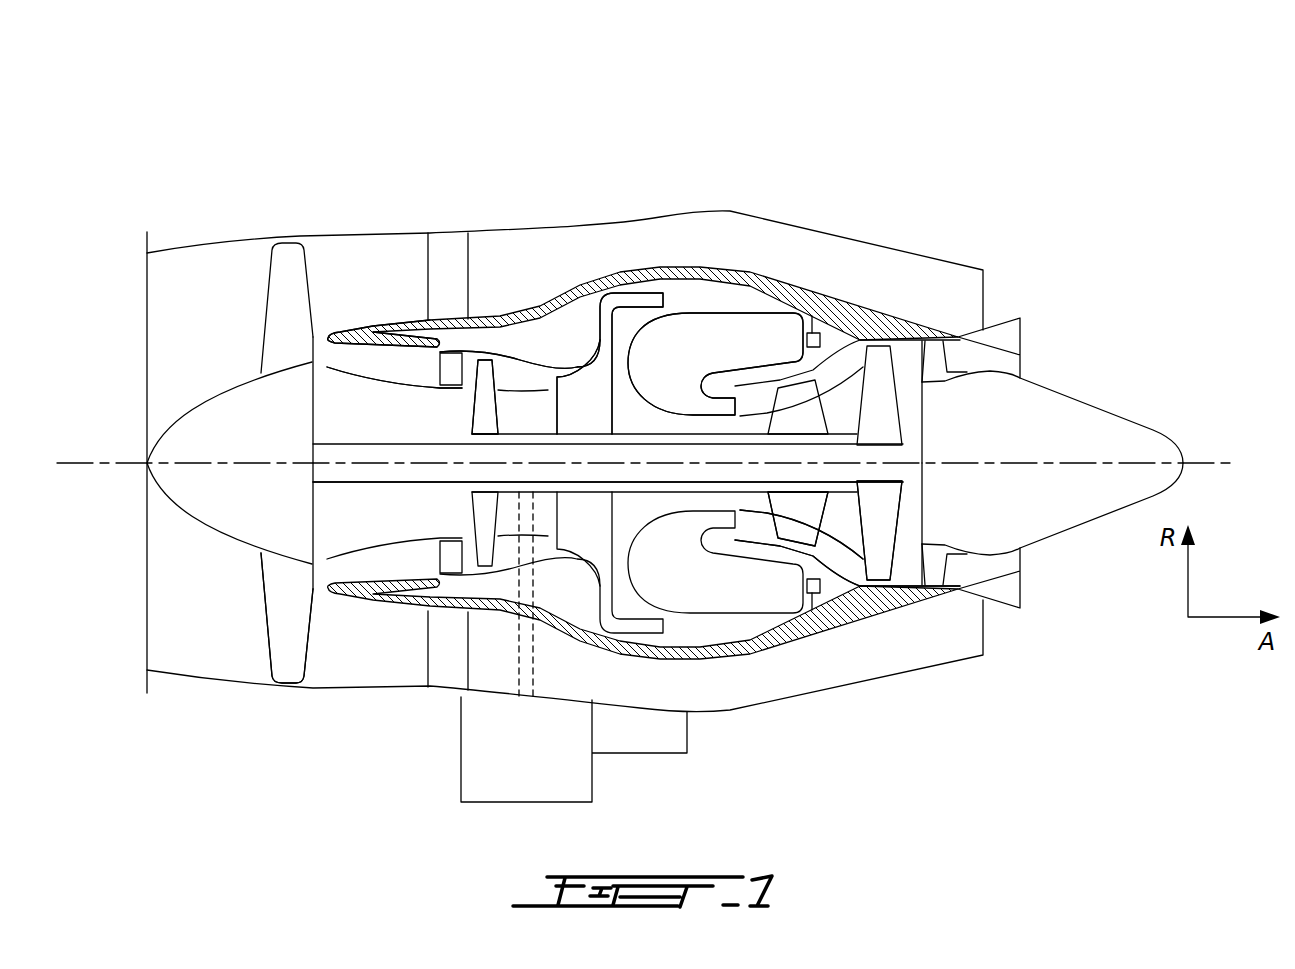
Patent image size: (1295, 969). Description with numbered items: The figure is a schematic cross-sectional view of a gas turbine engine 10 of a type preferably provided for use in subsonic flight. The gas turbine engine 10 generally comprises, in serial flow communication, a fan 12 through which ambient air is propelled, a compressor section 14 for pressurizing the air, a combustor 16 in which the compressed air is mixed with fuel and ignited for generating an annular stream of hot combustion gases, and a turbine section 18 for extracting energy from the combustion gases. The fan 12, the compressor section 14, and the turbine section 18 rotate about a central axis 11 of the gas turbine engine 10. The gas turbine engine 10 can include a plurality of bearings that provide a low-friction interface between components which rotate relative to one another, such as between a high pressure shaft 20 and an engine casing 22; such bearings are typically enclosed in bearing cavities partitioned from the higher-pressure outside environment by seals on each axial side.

The gas turbine engine 10 is at (853, 168).
The central axis 11 is at (1218, 455).
The fan 12 is at (285, 603).
The compressor section 14 is at (517, 370).
The combustor 16 is at (718, 333).
The turbine section 18 is at (832, 527).
The high pressure shaft 20 is at (380, 483).
The engine casing 22 is at (350, 370).